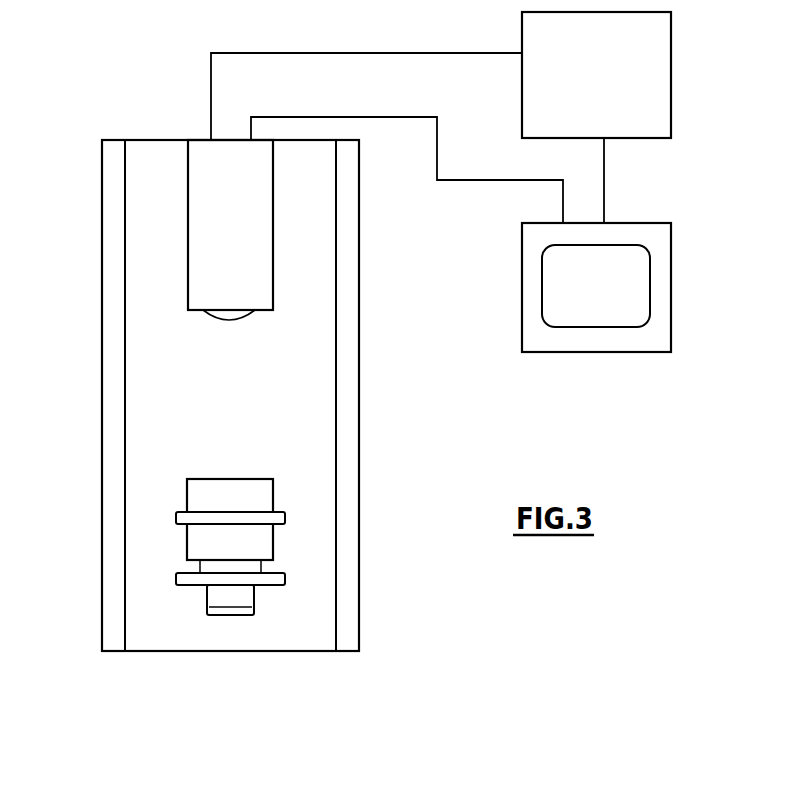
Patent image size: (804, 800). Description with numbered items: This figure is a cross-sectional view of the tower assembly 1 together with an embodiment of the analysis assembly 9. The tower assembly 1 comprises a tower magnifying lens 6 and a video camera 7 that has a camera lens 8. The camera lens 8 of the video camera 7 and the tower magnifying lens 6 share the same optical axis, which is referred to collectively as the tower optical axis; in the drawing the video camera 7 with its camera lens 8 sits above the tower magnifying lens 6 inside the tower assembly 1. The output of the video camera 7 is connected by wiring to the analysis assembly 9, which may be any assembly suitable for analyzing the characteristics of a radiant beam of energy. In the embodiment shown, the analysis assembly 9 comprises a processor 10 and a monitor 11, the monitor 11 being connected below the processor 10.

The tower assembly 1 is at (78, 158).
The tower magnifying lens 6 is at (273, 547).
The video camera 7 is at (273, 228).
The camera lens 8 is at (243, 320).
The analysis assembly 9 is at (504, 38).
The processor 10 is at (671, 62).
The monitor 11 is at (671, 275).